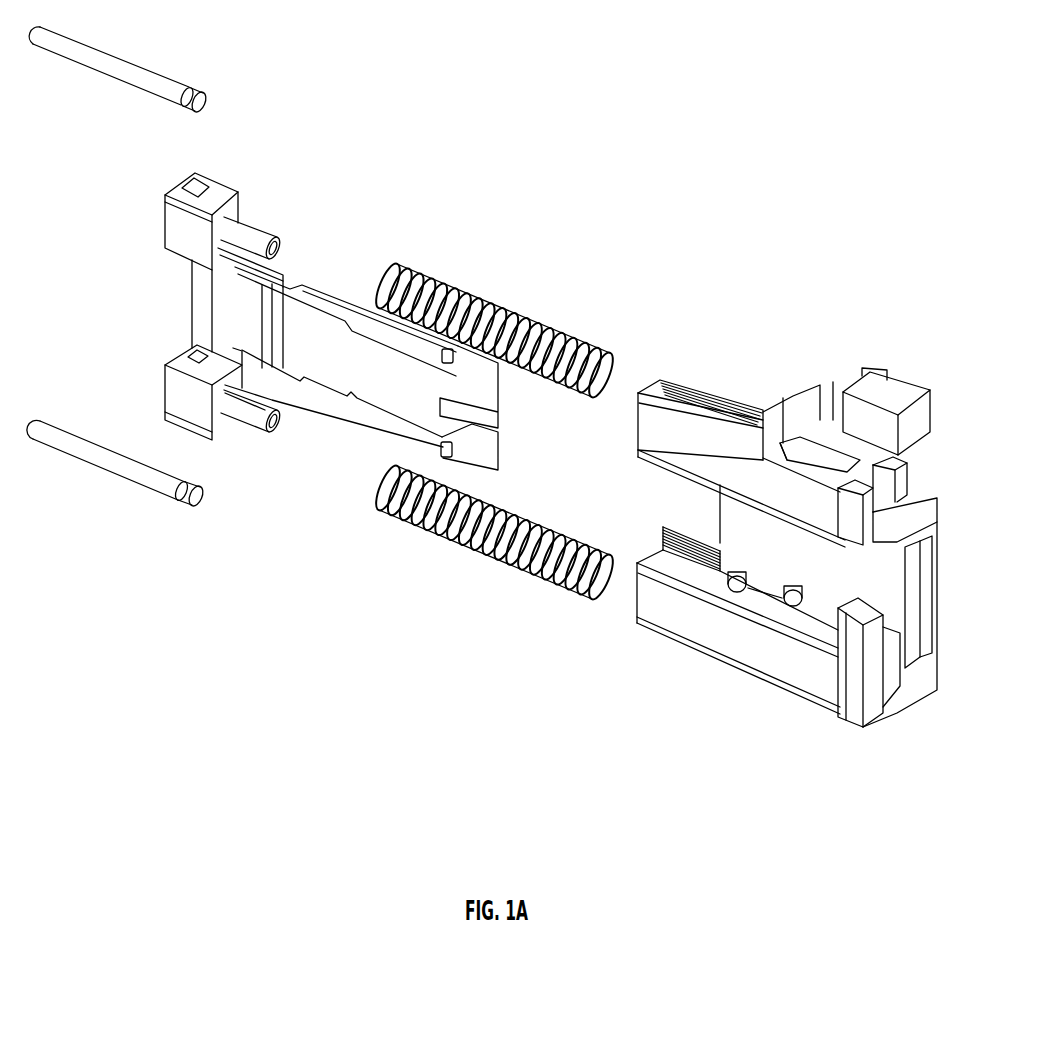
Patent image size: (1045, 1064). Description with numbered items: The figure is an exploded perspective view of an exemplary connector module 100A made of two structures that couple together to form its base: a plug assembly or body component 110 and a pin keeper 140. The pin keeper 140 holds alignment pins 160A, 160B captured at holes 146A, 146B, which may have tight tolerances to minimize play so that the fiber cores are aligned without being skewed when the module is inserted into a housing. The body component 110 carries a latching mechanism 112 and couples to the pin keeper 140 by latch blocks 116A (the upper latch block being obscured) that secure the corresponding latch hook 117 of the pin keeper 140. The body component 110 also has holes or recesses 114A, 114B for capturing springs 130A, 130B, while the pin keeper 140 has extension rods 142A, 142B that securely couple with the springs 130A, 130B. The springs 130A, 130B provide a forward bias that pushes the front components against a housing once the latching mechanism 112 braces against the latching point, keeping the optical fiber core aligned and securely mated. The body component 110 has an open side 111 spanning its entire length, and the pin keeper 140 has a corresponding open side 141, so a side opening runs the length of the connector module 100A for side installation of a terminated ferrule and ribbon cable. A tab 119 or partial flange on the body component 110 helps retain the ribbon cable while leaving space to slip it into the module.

The connector module 100A is at (627, 84).
The body component 110 is at (690, 378).
The open side 111 is at (629, 503).
The latching mechanism 112 is at (874, 366).
The hole or recess 114A is at (640, 371).
The hole or recess 114B is at (626, 597).
The latch block 116A is at (784, 590).
The latch hook 117 is at (498, 448).
The tab 119 is at (843, 610).
The spring 130A is at (480, 296).
The spring 130B is at (480, 553).
The pin keeper 140 is at (222, 186).
The open side 141 is at (159, 299).
The extension rod 142A is at (271, 232).
The extension rod 142B is at (262, 431).
The hole 146A is at (158, 185).
The hole 146B is at (155, 386).
The alignment pin 160A is at (120, 60).
The alignment pin 160B is at (73, 432).